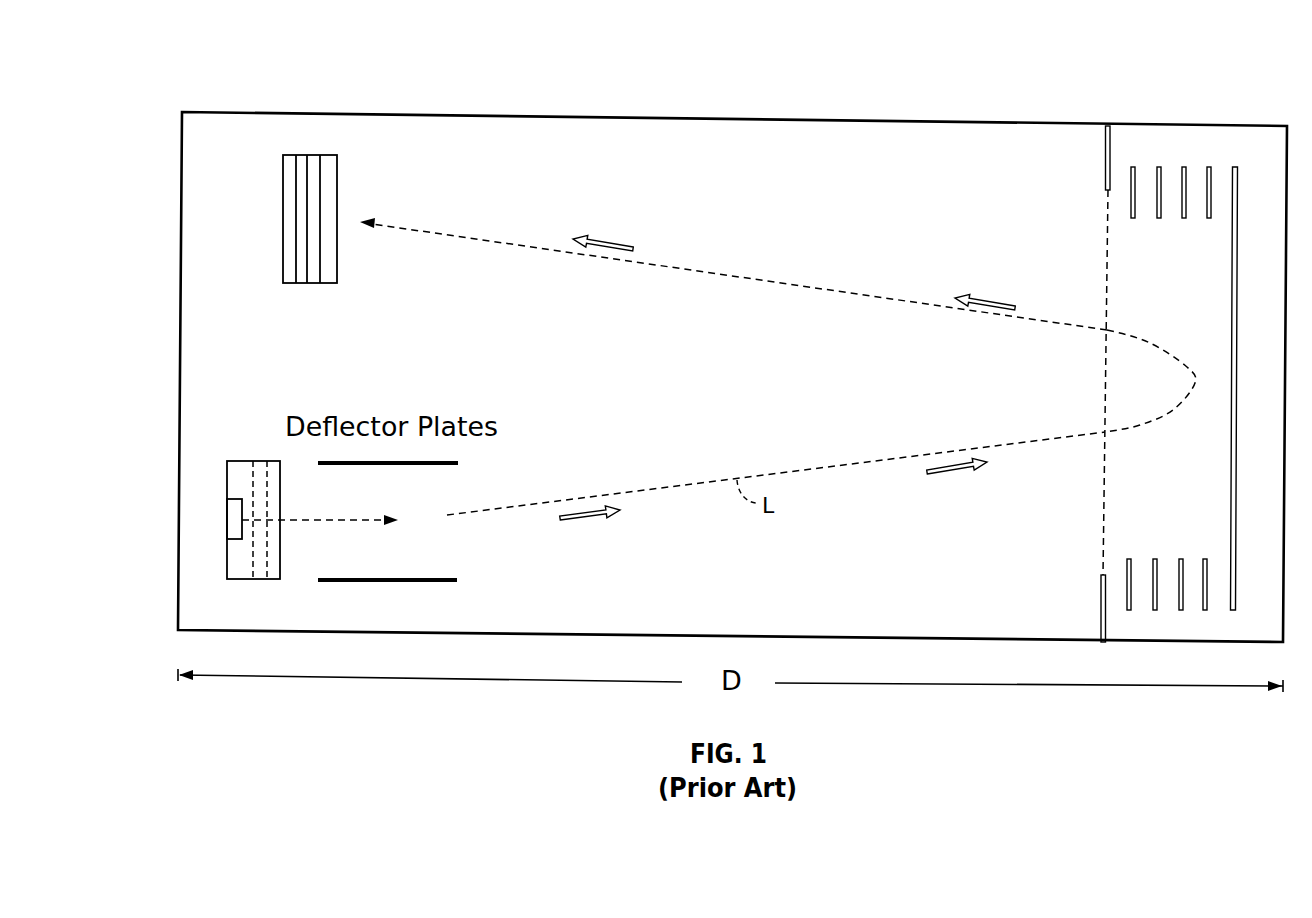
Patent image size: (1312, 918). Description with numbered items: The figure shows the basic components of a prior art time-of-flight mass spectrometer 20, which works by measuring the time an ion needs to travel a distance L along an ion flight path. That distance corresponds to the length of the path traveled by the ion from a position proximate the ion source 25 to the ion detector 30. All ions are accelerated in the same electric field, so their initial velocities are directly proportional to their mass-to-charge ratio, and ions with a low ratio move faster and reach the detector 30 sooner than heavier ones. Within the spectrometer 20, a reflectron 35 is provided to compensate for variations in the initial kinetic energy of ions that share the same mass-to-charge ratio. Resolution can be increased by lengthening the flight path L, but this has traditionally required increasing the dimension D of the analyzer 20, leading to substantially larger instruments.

The time-of-flight mass spectrometer 20 is at (192, 70).
The ion source 25 is at (242, 461).
The ion detector 30 is at (304, 154).
The reflectron 35 is at (1138, 296).